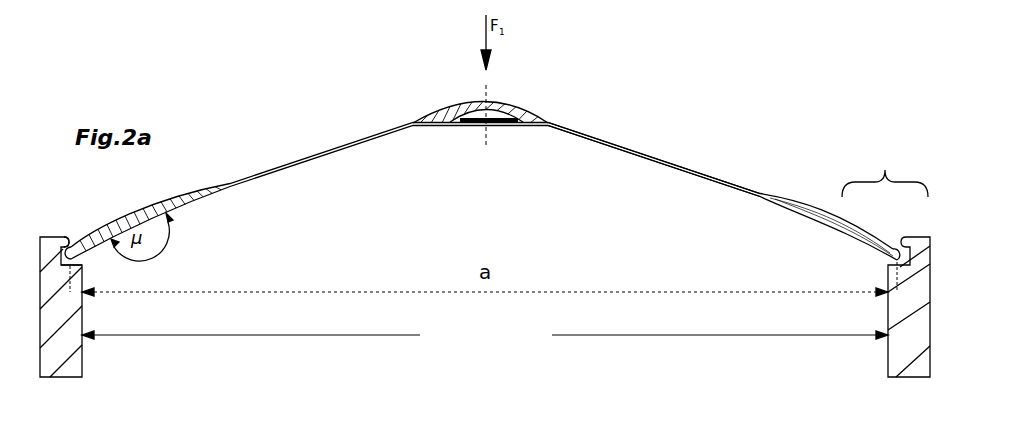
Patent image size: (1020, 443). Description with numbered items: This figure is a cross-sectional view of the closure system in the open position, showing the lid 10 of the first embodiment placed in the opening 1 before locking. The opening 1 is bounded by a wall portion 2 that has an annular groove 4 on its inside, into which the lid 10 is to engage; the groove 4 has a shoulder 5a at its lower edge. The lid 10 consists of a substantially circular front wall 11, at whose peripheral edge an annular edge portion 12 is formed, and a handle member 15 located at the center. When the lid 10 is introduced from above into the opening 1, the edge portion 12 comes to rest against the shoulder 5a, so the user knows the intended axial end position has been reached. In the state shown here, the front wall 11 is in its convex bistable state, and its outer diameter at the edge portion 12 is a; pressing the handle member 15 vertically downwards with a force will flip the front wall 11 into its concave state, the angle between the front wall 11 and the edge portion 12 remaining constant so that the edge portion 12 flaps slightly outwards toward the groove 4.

The opening 1 is at (485, 336).
The wall portion 2 is at (73, 368).
The annular groove 4 is at (62, 242).
The shoulder 5a is at (82, 267).
The lid 10 is at (717, 150).
The front wall 11 is at (640, 137).
The edge portion 12 is at (885, 168).
The handle member 15 is at (527, 112).